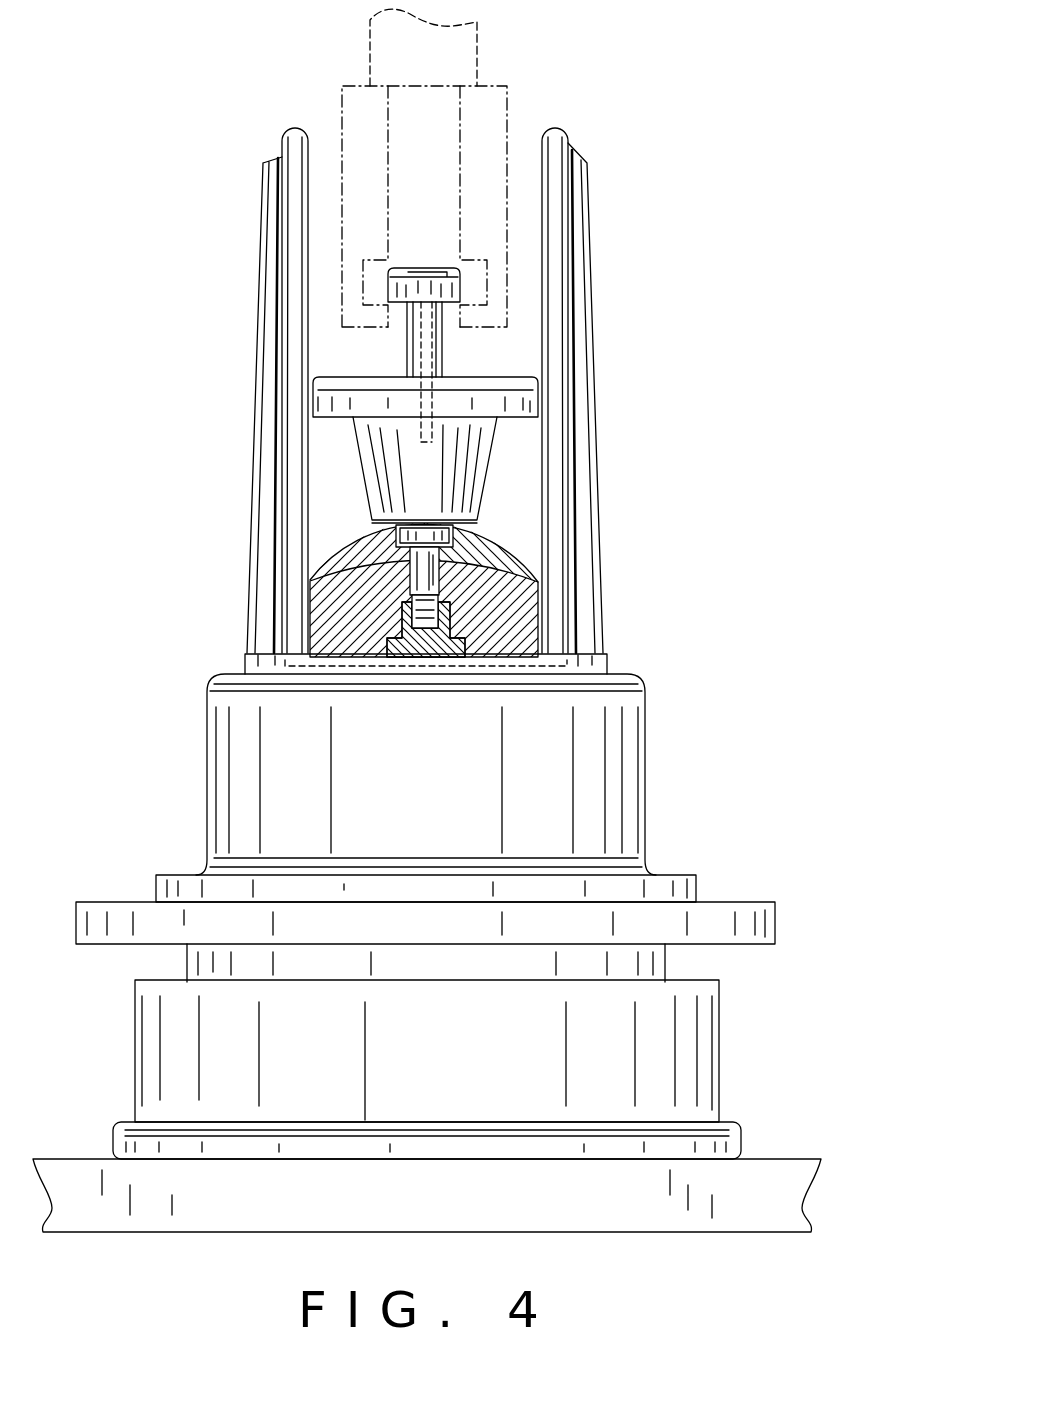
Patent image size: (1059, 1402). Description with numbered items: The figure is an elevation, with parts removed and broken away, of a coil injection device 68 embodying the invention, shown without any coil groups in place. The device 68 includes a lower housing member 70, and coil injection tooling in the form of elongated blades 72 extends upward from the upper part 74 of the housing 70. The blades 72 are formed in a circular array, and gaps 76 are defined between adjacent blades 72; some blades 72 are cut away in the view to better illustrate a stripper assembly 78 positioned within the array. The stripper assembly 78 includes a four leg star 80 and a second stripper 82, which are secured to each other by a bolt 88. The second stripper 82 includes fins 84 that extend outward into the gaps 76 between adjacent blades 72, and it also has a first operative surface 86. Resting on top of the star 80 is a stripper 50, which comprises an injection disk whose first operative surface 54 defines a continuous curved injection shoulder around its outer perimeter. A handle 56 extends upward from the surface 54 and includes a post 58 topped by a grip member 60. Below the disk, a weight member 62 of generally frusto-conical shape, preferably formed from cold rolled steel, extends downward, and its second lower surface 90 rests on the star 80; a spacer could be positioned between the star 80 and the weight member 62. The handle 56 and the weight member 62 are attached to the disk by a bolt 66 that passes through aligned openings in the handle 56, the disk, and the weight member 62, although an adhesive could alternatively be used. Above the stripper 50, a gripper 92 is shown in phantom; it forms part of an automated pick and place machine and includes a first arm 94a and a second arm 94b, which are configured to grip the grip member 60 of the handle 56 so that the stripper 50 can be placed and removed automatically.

The stripper 50 is at (435, 396).
The first operative surface 54 is at (338, 380).
The handle 56 is at (423, 339).
The post 58 is at (407, 353).
The grip member 60 is at (467, 287).
The weight member 62 is at (448, 465).
The bolt 66 is at (435, 268).
The coil injection device 68 is at (441, 361).
The lower housing member 70 is at (408, 808).
The blades 72 is at (278, 157).
The upper part 74 is at (613, 673).
The gaps 76 is at (441, 361).
The stripper assembly 78 is at (499, 513).
The four leg star 80 is at (503, 560).
The second stripper 82 is at (523, 610).
The fins 84 is at (243, 625).
The first operative surface 86 is at (345, 567).
The bolt 88 is at (432, 580).
The second lower surface 90 is at (388, 528).
The gripper 92 is at (438, 62).
The first arm 94a is at (390, 188).
The second arm 94b is at (508, 125).